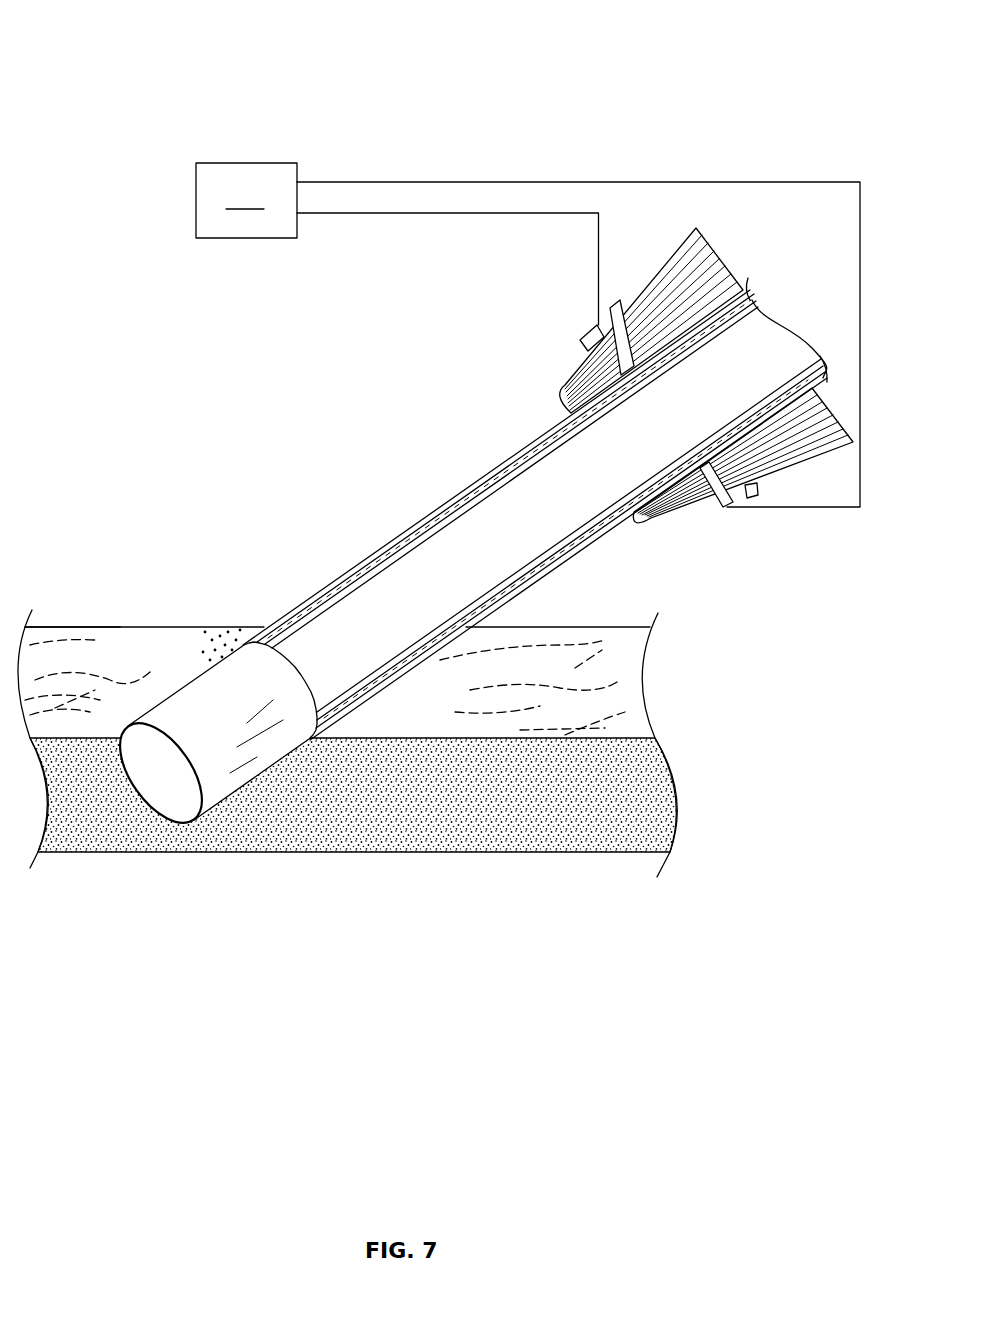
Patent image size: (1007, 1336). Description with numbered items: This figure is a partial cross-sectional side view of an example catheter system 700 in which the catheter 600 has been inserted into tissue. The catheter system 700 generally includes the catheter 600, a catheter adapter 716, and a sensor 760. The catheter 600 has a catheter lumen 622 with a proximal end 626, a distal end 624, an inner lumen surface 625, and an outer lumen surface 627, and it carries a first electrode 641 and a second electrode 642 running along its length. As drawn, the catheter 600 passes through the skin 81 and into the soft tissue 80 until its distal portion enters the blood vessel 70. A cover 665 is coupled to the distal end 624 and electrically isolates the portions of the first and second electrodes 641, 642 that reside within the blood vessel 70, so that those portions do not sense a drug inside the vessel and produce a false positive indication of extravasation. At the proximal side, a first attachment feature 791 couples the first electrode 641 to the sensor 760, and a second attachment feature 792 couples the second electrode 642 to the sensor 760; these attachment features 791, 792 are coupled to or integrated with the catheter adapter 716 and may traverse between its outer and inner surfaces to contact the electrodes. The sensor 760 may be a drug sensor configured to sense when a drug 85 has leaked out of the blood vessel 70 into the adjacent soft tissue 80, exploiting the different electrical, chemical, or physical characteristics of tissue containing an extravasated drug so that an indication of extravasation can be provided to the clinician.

The catheter system 700 is at (450, 257).
The sensor 760 is at (246, 200).
The catheter adapter 716 is at (667, 272).
The proximal end 626 is at (744, 262).
The first attachment feature 791 is at (580, 340).
The second attachment feature 792 is at (708, 512).
The catheter 600 is at (467, 551).
The catheter lumen 622 is at (535, 436).
The outer lumen surface 627 is at (457, 490).
The first electrode 641 is at (500, 463).
The second electrode 642 is at (597, 528).
The skin 81 is at (170, 625).
The drug 85 is at (207, 622).
The soft tissue 80 is at (635, 680).
The blood vessel 70 is at (663, 790).
The inner lumen surface 625 is at (163, 795).
The cover 665 is at (233, 740).
The distal end 624 is at (212, 806).